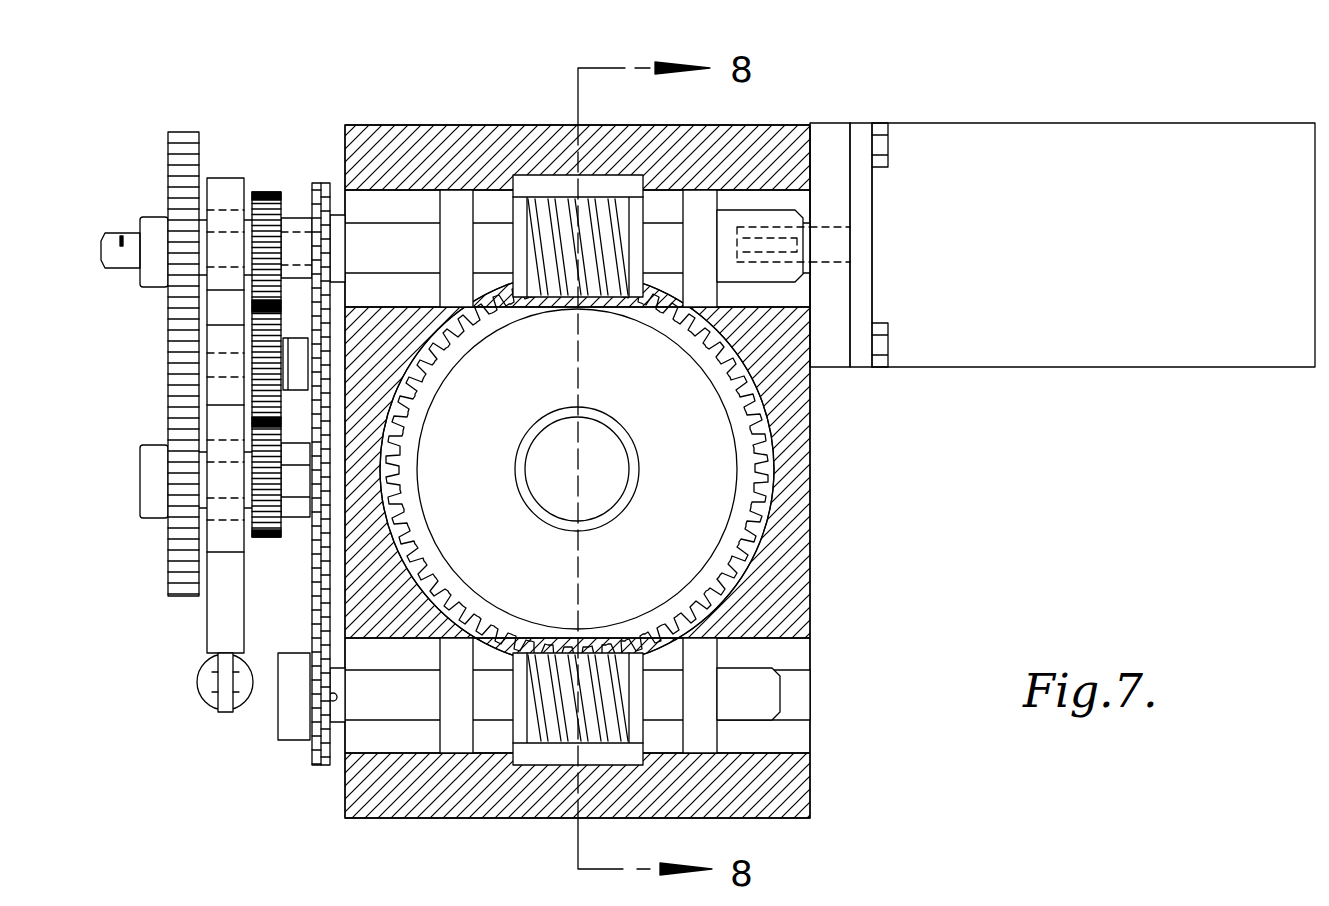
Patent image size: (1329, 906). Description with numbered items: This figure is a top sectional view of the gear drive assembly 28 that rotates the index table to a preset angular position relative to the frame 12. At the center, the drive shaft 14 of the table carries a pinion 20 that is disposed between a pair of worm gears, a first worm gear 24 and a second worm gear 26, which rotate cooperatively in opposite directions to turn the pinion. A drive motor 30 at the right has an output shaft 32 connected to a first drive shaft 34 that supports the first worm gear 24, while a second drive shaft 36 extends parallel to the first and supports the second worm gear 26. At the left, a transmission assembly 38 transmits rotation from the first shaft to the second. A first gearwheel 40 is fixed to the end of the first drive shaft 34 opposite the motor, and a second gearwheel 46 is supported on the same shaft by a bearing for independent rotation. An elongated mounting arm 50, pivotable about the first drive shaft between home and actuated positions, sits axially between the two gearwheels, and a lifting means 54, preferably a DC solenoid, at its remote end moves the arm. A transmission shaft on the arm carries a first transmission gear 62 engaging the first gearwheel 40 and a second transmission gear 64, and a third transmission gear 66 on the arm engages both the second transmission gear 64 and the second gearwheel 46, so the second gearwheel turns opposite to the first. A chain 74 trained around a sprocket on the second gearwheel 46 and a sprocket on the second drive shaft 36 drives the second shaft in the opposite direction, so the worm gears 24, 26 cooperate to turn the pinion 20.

The frame 12 is at (795, 522).
The drive shaft 14 is at (610, 453).
The pinion 20 is at (745, 487).
The first worm gear 24 is at (556, 185).
The second worm gear 26 is at (566, 740).
The gear drive assembly 28 is at (303, 108).
The drive motor 30 is at (955, 318).
The output shaft 32 is at (828, 243).
The first drive shaft 34 is at (668, 243).
The second drive shaft 36 is at (676, 713).
The transmission assembly 38 is at (150, 377).
The first gearwheel 40 is at (171, 357).
The second gearwheel 46 is at (273, 363).
The mounting arm 50 is at (218, 188).
The lifting means 54 is at (226, 712).
The first transmission gear 62 is at (197, 594).
The second transmission gear 64 is at (263, 538).
The third transmission gear 66 is at (284, 336).
The chain 74 is at (310, 628).